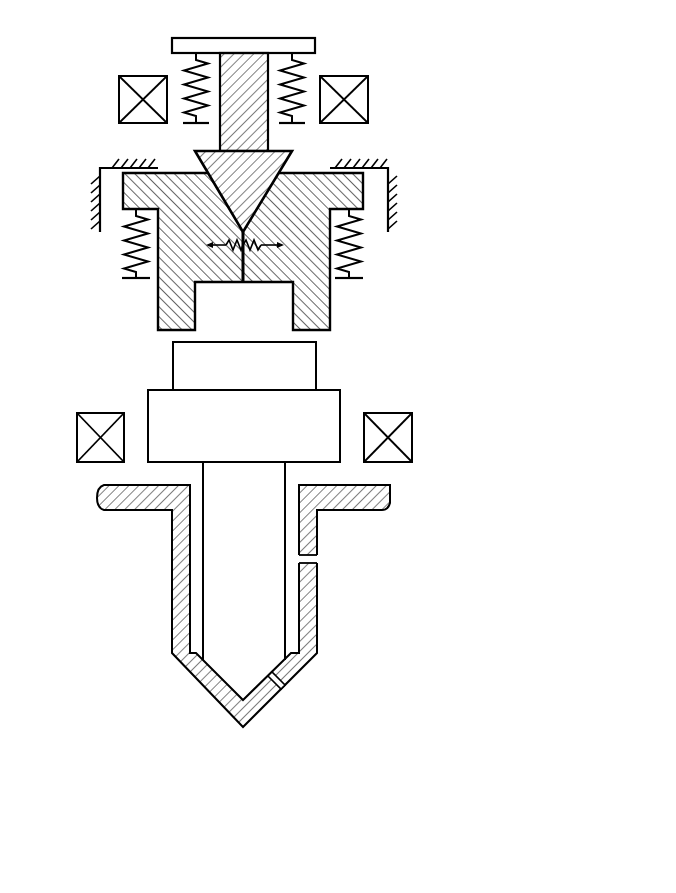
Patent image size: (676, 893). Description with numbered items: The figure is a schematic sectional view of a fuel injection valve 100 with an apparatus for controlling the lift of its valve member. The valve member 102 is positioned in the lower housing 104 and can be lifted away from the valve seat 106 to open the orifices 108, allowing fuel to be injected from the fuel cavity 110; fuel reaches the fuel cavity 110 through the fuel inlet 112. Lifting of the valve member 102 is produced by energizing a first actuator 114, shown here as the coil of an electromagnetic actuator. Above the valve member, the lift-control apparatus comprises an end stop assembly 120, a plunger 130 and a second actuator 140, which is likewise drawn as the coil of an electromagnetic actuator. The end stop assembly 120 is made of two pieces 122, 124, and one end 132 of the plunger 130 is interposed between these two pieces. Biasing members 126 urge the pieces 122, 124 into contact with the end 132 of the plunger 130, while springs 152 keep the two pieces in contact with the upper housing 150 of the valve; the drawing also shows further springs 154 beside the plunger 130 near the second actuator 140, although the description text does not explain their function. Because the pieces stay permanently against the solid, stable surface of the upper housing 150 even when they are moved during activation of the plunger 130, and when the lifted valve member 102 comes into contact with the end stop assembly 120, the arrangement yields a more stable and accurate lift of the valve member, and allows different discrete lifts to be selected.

The fuel injection valve 100 is at (582, 86).
The valve member 102 is at (250, 612).
The lower housing 104 is at (310, 627).
The valve seat 106 is at (217, 688).
The orifices 108 is at (290, 681).
The fuel cavity 110 is at (243, 606).
The fuel inlet 112 is at (317, 557).
The first actuator 114 is at (413, 441).
The end stop assembly 120 is at (237, 243).
The first piece of end stop assembly 122 is at (137, 189).
The second piece of end stop assembly 124 is at (355, 192).
The biasing members 126 is at (165, 280).
The plunger 130 is at (243, 95).
The end of plunger 132 is at (225, 167).
The second actuator 140 is at (370, 95).
The upper housing 150 is at (404, 204).
The springs 152 is at (357, 250).
The upper spring 154 is at (190, 73).